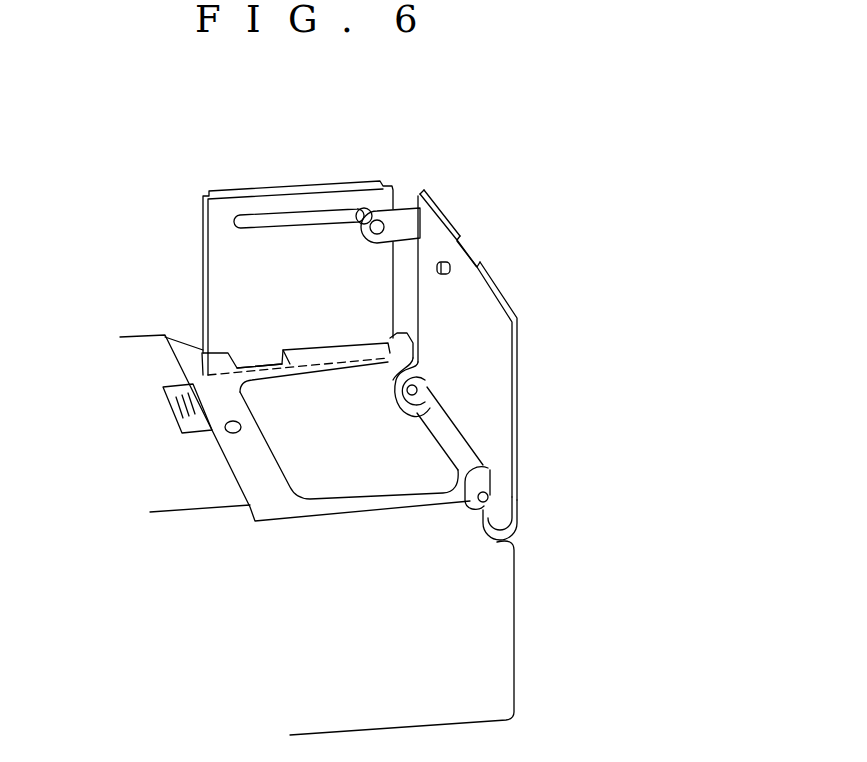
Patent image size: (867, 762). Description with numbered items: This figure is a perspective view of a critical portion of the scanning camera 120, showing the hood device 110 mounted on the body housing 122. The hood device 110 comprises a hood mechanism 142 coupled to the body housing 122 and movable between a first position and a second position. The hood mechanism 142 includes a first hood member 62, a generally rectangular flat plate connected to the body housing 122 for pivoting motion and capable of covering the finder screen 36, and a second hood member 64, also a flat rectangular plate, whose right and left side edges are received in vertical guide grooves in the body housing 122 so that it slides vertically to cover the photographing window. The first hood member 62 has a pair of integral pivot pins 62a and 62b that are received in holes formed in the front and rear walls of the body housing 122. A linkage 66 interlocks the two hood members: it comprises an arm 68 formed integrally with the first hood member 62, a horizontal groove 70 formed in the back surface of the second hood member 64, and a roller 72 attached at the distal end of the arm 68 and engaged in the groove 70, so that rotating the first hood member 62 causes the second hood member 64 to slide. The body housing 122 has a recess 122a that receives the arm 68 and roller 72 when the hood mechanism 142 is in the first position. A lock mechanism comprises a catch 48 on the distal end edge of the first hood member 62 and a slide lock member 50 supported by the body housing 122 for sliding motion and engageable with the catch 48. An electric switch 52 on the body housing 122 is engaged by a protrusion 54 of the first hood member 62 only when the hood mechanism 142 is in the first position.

The finder screen 36 is at (353, 476).
The catch 48 is at (470, 253).
The slide lock member 50 is at (173, 413).
The electric switch 52 is at (233, 434).
The protrusion 54 is at (443, 278).
The first hood member 62 is at (497, 393).
The pivot pin 62a is at (400, 403).
The pivot pin 62b is at (477, 512).
The second hood member 64 is at (222, 290).
The linkage 66 is at (393, 160).
The arm 68 is at (404, 220).
The horizontal groove 70 is at (268, 219).
The roller 72 is at (353, 210).
The hood device 110 is at (503, 137).
The scanning camera 120 is at (557, 607).
The body housing 122 is at (490, 682).
The recess 122a is at (235, 361).
The hood mechanism 142 is at (523, 207).